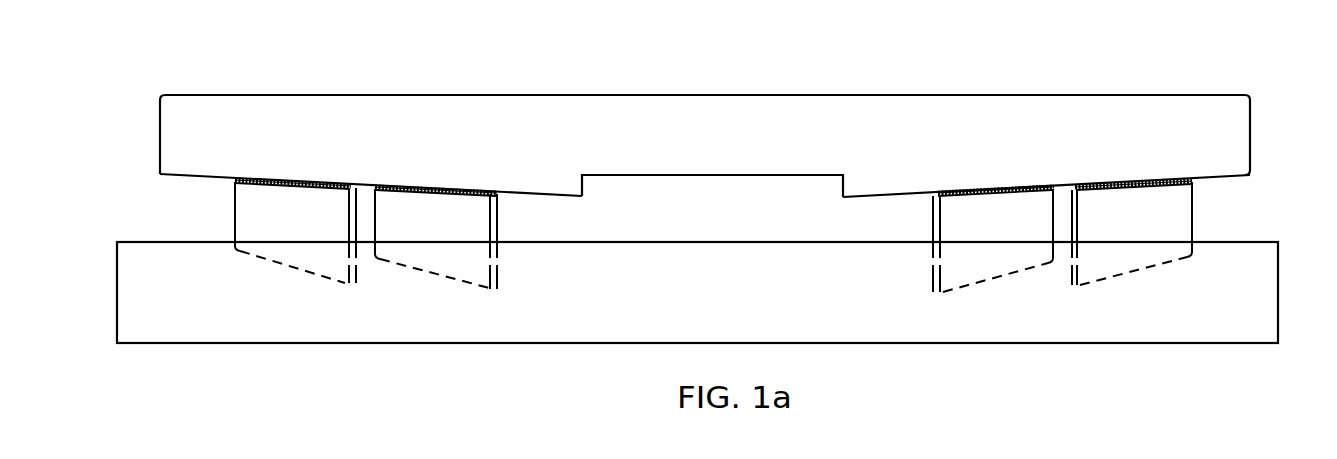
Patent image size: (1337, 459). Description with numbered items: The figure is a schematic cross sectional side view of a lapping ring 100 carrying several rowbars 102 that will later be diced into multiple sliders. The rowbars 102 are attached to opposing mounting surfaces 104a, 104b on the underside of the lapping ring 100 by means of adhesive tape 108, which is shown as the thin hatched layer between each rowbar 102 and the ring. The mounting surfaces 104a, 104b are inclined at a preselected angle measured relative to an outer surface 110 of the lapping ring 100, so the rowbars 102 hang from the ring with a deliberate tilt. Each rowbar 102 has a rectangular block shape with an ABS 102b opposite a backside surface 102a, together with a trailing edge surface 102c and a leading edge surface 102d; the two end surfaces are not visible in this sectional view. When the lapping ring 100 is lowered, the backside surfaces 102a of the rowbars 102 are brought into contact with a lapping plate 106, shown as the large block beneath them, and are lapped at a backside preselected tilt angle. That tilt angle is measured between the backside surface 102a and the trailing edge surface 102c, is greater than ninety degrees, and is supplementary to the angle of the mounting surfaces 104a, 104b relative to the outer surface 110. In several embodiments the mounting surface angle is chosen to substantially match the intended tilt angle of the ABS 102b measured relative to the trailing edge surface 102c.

The lapping ring 100 is at (1096, 94).
The rowbar 102 is at (713, 287).
The backside surface 102a is at (282, 265).
The ABS 102b is at (480, 196).
The trailing edge surface 102c is at (497, 276).
The leading edge surface 102d is at (235, 212).
The mounting surface 104a is at (582, 197).
The mounting surface 104b is at (843, 197).
The lapping plate 106 is at (697, 292).
The adhesive tape 108 is at (235, 182).
The outer surface 110 is at (160, 128).